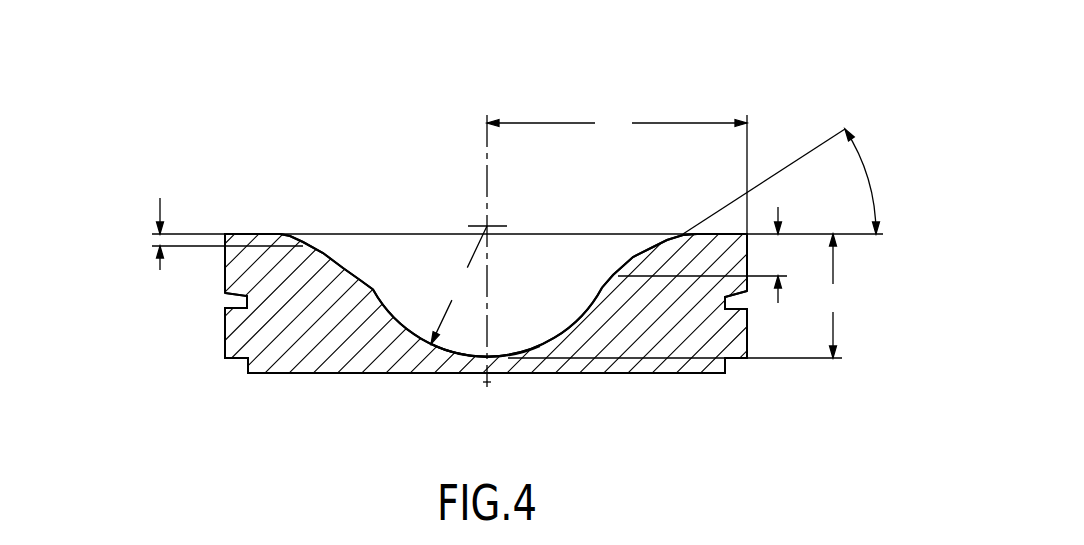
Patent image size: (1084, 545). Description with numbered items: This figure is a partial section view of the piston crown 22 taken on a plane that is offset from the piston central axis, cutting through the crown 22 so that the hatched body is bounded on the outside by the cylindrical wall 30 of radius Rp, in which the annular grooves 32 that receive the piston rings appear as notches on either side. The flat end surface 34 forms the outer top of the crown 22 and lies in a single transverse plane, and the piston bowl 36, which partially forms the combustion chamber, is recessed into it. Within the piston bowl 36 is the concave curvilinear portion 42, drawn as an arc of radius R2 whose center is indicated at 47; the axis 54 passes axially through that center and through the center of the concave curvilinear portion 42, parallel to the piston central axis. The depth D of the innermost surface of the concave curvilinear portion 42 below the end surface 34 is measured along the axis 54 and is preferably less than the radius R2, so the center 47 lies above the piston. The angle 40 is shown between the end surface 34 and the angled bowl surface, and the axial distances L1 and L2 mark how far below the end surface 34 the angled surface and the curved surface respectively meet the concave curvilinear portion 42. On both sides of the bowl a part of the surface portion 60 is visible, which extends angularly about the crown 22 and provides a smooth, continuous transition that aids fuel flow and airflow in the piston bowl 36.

The crown 22 is at (698, 87).
The cylindrical wall 30 is at (224, 350).
The annular grooves 32 is at (238, 305).
The end surface 34 is at (257, 233).
The piston bowl 36 is at (409, 265).
The angle 40 is at (867, 180).
The concave curvilinear portion 42 is at (540, 347).
The center of radius R2 47 is at (487, 224).
The axis 54 is at (488, 383).
The surface portion 60 is at (323, 253).
The radius RP is at (617, 172).
The radius R2 is at (459, 285).
The axial distance L1 is at (704, 255).
The axial distance L2 is at (160, 237).
The depth D is at (675, 296).